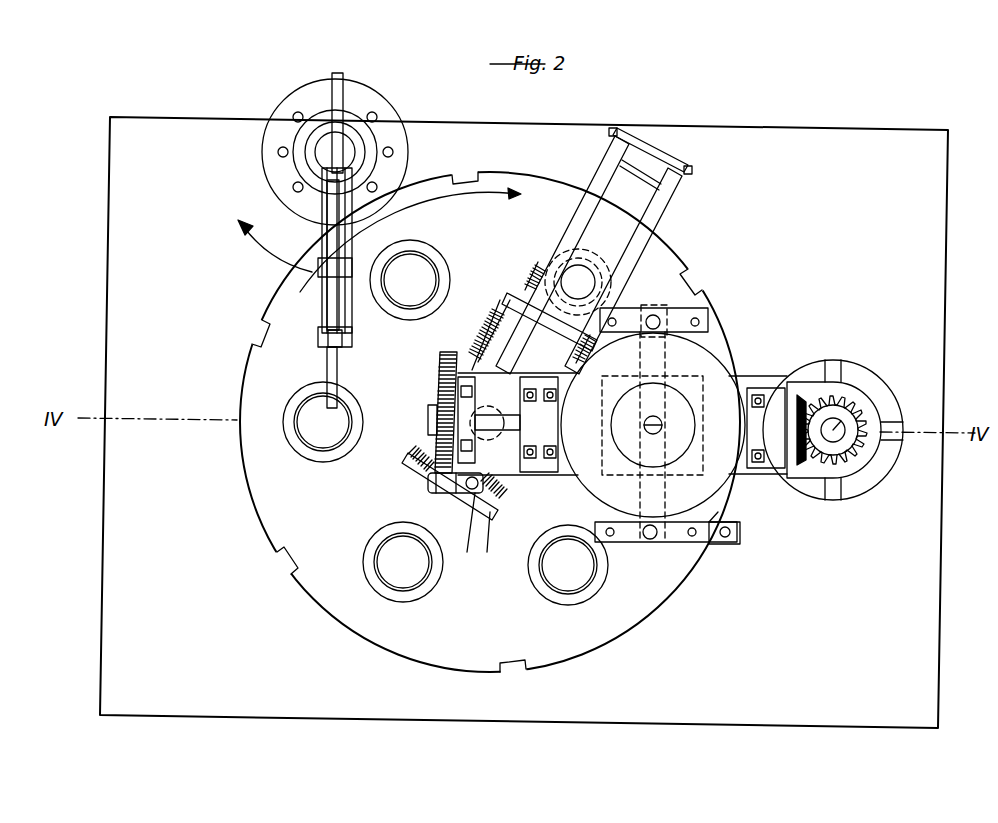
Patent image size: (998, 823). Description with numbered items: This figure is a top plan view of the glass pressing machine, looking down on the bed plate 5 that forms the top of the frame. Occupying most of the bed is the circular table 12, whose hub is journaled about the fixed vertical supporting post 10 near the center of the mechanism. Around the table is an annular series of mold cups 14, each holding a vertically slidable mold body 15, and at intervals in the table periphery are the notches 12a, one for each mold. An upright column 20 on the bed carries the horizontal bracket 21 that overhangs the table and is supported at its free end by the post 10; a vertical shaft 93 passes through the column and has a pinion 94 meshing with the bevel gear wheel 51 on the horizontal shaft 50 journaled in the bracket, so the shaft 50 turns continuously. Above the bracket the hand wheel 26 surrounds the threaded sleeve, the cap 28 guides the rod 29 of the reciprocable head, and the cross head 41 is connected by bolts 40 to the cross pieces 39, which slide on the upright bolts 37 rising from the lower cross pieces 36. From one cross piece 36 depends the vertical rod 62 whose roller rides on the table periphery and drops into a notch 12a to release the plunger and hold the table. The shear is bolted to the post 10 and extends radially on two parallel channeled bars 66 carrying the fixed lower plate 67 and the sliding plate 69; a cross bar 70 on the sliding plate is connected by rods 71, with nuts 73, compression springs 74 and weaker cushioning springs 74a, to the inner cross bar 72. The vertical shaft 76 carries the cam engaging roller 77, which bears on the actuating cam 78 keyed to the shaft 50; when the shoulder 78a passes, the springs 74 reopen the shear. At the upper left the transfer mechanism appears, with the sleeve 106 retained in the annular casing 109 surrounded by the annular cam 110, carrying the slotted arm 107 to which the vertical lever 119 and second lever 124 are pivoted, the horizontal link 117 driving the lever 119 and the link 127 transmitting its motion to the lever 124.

The bed plate 5 is at (524, 422).
The table 12 is at (650, 612).
The notch 12a is at (466, 178).
The mold cup 14 is at (396, 312).
The mold body 15 is at (418, 267).
The annular casing 109 is at (312, 138).
The annular cam 110 is at (310, 122).
The horizontal link 117 is at (350, 145).
The sleeve 106 is at (340, 148).
The vertical lever 119 is at (322, 262).
The link 127 is at (340, 304).
The second lever 124 is at (318, 340).
The slotted arm 107 is at (328, 368).
The shaft 50 is at (540, 455).
The supporting post 10 is at (508, 472).
The hand wheel 26 is at (730, 370).
The cap 28 is at (697, 428).
The rod 29 is at (660, 422).
The reciprocable cross head 41 is at (640, 492).
The horizontal bracket 21 is at (756, 476).
The cross piece 39 is at (630, 310).
The upright bolt 37 is at (700, 320).
The bolt 40 is at (653, 330).
The cross piece 36 is at (724, 544).
The vertical rod 62 is at (730, 528).
The channeled bar 66 is at (608, 180).
The lower plate 67 is at (600, 216).
The sliding plate 69 is at (596, 234).
The cross bar 70 is at (508, 300).
The rod 71 is at (540, 270).
The nut 73 is at (490, 322).
The actuating cam 78 is at (444, 368).
The shoulder 78a is at (433, 410).
The compression spring 74 is at (478, 343).
The weaker compression spring 74a is at (410, 470).
The cam engaging roller 77 is at (440, 494).
The vertical shaft 76 is at (478, 520).
The cross bar 72 is at (486, 528).
The upright column 20 is at (838, 375).
The vertical shaft 93 is at (850, 418).
The pinion 94 is at (862, 425).
The bevel gear wheel 51 is at (802, 465).